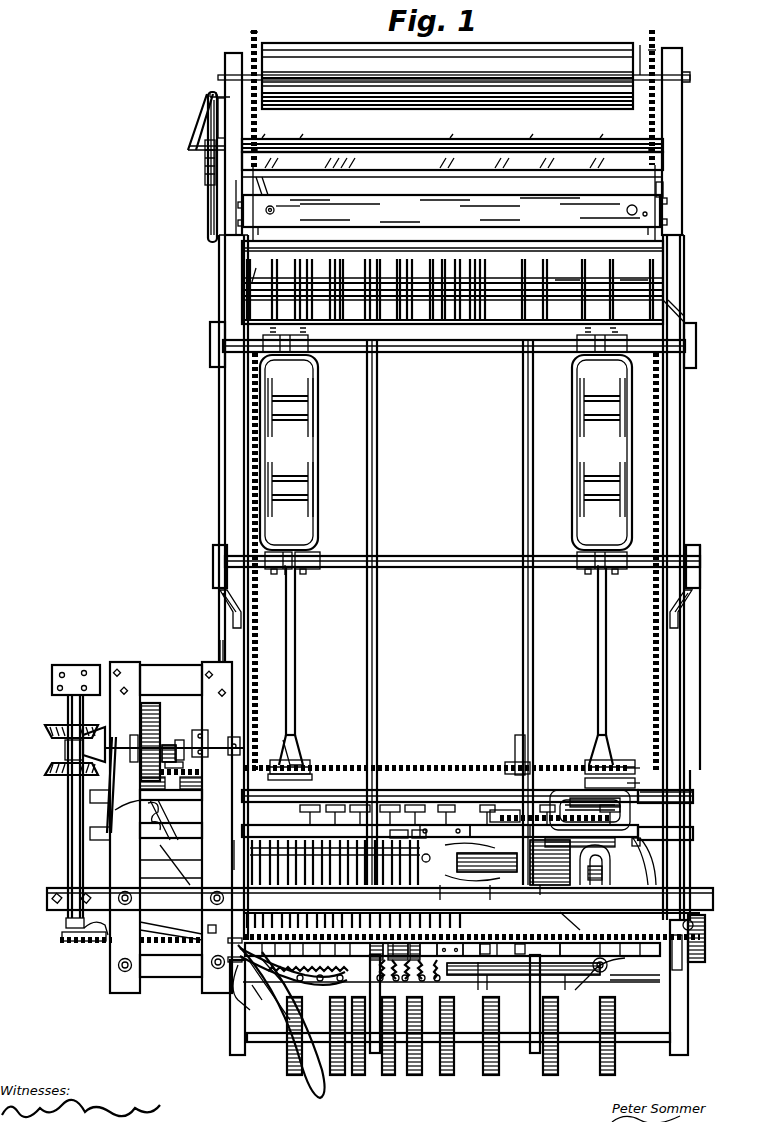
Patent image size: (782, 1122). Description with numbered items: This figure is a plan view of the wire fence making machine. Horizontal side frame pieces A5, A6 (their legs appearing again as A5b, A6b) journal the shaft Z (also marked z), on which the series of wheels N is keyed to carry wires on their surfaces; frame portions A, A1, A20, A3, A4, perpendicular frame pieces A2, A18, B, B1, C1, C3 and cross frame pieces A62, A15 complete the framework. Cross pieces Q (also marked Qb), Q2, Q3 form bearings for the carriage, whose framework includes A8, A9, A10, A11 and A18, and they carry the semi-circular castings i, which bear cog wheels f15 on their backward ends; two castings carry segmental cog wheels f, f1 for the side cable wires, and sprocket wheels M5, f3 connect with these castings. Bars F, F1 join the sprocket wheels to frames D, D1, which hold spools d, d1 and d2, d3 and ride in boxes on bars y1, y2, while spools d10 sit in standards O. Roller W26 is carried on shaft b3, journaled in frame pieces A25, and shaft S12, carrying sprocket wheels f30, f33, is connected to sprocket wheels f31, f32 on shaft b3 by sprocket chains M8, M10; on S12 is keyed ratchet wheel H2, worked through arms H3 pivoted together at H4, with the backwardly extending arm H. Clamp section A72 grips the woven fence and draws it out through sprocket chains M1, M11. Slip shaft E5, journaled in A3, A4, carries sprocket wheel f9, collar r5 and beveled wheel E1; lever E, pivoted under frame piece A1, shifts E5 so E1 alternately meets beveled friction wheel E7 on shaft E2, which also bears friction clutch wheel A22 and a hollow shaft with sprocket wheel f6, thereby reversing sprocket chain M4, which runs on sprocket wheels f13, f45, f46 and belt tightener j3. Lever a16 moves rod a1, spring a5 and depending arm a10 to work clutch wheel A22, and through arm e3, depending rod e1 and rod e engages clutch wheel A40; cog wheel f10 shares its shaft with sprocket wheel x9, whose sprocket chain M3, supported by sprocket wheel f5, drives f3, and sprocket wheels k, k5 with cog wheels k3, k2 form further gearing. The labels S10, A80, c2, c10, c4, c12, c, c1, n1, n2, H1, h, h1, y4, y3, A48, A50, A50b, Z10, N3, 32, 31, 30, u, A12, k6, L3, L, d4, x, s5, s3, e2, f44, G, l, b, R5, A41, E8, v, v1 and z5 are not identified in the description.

The roller W26 is at (447, 76).
The roller shaft S10 is at (218, 78).
The sprocket chain M10 is at (258, 40).
The sprocket wheel f31 is at (250, 36).
The sprocket chain M8 is at (656, 38).
The sprocket wheel f32 is at (656, 52).
The shaft b3 is at (635, 51).
The frame piece A25 is at (682, 108).
The shaft S12 is at (365, 152).
The sprocket wheel f30 is at (258, 148).
The sprocket wheel f33 is at (655, 148).
The board A80 is at (452, 155).
The upper section of clamp A72 is at (451, 215).
The pivot c2 is at (273, 214).
The link c10 is at (290, 198).
The arm c4 is at (262, 186).
The cam c12 is at (621, 207).
The pivot c is at (649, 213).
The bracket c1 is at (663, 190).
The lugs n1 is at (670, 209).
The lugs n2 is at (234, 218).
The perpendicular frame piece A2 is at (237, 207).
The backwardly extending arm H is at (208, 212).
The arm H3 is at (200, 126).
The pivot H4 is at (206, 92).
The lever pivot H1 is at (228, 118).
The ratchet wheel H2 is at (205, 172).
The standard O is at (469, 283).
The spool d10 is at (449, 264).
The cross frame piece A62 is at (605, 320).
The bar y1 is at (465, 348).
The perpendicular frame piece B1 is at (210, 350).
The perpendicular frame piece C3 is at (696, 350).
The spool frame D is at (318, 447).
The spool d is at (300, 408).
The spool d1 is at (300, 487).
The spool frame D1 is at (640, 440).
The spool d3 is at (612, 408).
The spool d2 is at (612, 487).
The horizontal side frame piece A5 is at (231, 448).
The horizontal side frame piece A6 is at (675, 577).
The bar y2 is at (445, 560).
The perpendicular frame piece B is at (213, 572).
The perpendicular frame piece C1 is at (700, 572).
The hanger h is at (275, 576).
The journal y4 is at (310, 572).
The journal y3 is at (590, 572).
The hanger h1 is at (612, 576).
The bar F is at (295, 620).
The bar F1 is at (598, 622).
The centre upright A48 is at (377, 715).
The centre upright A50 is at (533, 698).
The sprocket chain M3 is at (430, 768).
The sprocket wheel M5 is at (300, 760).
The segmental cog wheel f is at (300, 774).
The sprocket chain M11 is at (280, 730).
The guide Z10 is at (515, 748).
The sprocket wheel f5 is at (530, 765).
The sprocket chain M1 is at (612, 760).
The sprocket wheel f3 is at (637, 757).
The segmental cog wheel f1 is at (637, 772).
The cross piece Q3 is at (455, 790).
The rail N3 is at (466, 795).
The rail end 32 is at (665, 792).
The cross piece Q is at (680, 836).
The rail end 31 is at (665, 830).
The cog wheel f15 is at (460, 797).
The chain drive 30 is at (505, 812).
The semi-circular casting i is at (335, 847).
The blocks u is at (408, 822).
The carriage frame part A9 is at (445, 840).
The carriage frame part A11 is at (500, 830).
The gear A12 is at (487, 862).
The cog wheel k2 is at (458, 856).
The sprocket wheel k5 is at (465, 879).
The casing L3 is at (590, 816).
The carriage frame part A8 is at (595, 795).
The gear L is at (560, 862).
The sprocket wheel k is at (610, 855).
The block d4 is at (602, 872).
The cog wheel k3 is at (656, 860).
The shaft Z is at (634, 835).
The frame piece A3 is at (380, 900).
The pins x is at (344, 908).
The pin s5 is at (440, 896).
The pin s3 is at (497, 896).
The pin k6 is at (546, 893).
The link e2 is at (570, 911).
The sprocket chain M4 is at (648, 920).
The sprocket wheel f13 is at (690, 920).
The frame piece A18 is at (705, 930).
The cross piece Q2 is at (682, 950).
The sprocket wheel f46 is at (354, 960).
The blocks f44 is at (481, 948).
The carriage frame part A10 is at (523, 957).
The belt tightener j3 is at (590, 948).
The rod G is at (472, 982).
The sprocket wheel f45 is at (492, 985).
The lever l is at (600, 982).
The pin b is at (566, 990).
The roller R5 is at (605, 972).
The cross frame piece A15 is at (635, 989).
The horizontal side frame piece A5b is at (236, 1058).
The horizontal side frame piece A6b is at (678, 1058).
The shaft z is at (262, 1042).
The wheel N is at (451, 1046).
The rod A41 is at (375, 1053).
The rod A50b is at (535, 1053).
The lever a16 is at (282, 1022).
The depending rod e1 is at (231, 989).
The projecting arm e3 is at (262, 999).
The frame piece A4 is at (127, 680).
The frame piece A1 is at (171, 827).
The rod a1 is at (232, 855).
The friction clutch wheel A22 is at (160, 735).
The depending arm a10 is at (181, 738).
The sprocket wheel f6 is at (200, 730).
The friction clutch wheel A40 is at (205, 770).
The sprocket wheel x9 is at (190, 778).
The cross piece Qb is at (146, 808).
The cog wheel f10 is at (148, 812).
The spring a5 is at (112, 808).
The beveled wheel E1 is at (60, 722).
The pulley E8 is at (56, 778).
The beveled friction wheel E7 is at (65, 748).
The shaft E2 is at (114, 738).
The slip shaft E5 is at (68, 855).
The collar r5 is at (66, 924).
The sprocket wheel f9 is at (66, 942).
The frame piece A20 is at (171, 966).
The frame piece A is at (130, 882).
The rod e is at (175, 865).
The lever E is at (179, 924).
The pin v is at (226, 837).
The pin v1 is at (236, 858).
The pin z5 is at (129, 958).